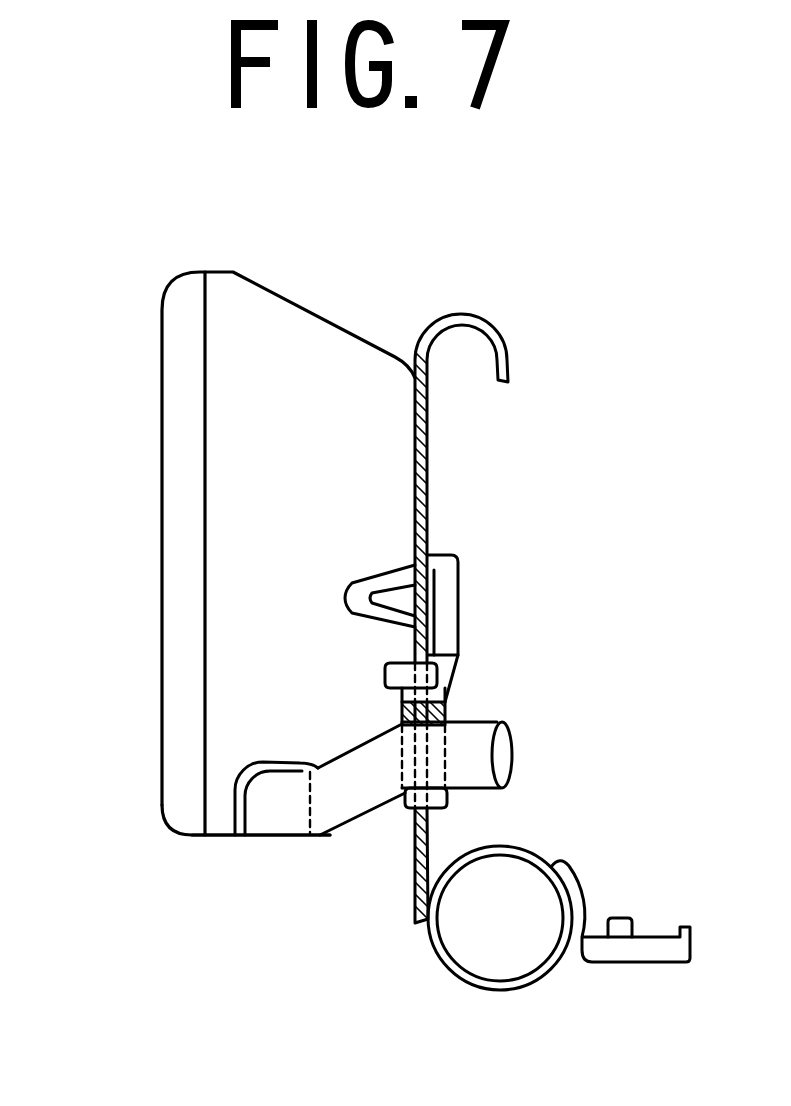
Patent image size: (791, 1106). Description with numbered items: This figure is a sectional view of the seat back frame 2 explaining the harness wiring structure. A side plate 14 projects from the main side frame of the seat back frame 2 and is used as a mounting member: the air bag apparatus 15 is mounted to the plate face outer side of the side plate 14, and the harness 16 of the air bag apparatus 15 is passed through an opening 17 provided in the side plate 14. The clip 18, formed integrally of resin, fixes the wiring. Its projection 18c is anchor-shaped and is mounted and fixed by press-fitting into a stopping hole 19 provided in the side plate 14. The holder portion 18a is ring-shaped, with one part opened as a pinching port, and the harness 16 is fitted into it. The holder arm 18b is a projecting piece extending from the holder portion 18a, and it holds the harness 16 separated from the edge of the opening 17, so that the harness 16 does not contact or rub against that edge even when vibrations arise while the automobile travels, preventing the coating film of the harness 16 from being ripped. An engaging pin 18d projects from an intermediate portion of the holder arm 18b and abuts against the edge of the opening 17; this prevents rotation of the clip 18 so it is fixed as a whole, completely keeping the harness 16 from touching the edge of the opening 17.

The seat back frame 2 is at (538, 852).
The side plate 14 is at (461, 313).
The air bag apparatus 15 is at (290, 310).
The harness 16 is at (518, 763).
The opening 17 is at (458, 648).
The clip 18 is at (469, 601).
The holder portion 18a is at (407, 810).
The holder arm 18b is at (454, 565).
The projection 18c is at (352, 582).
The engaging pin 18d is at (383, 668).
The stopping hole 19 is at (415, 574).